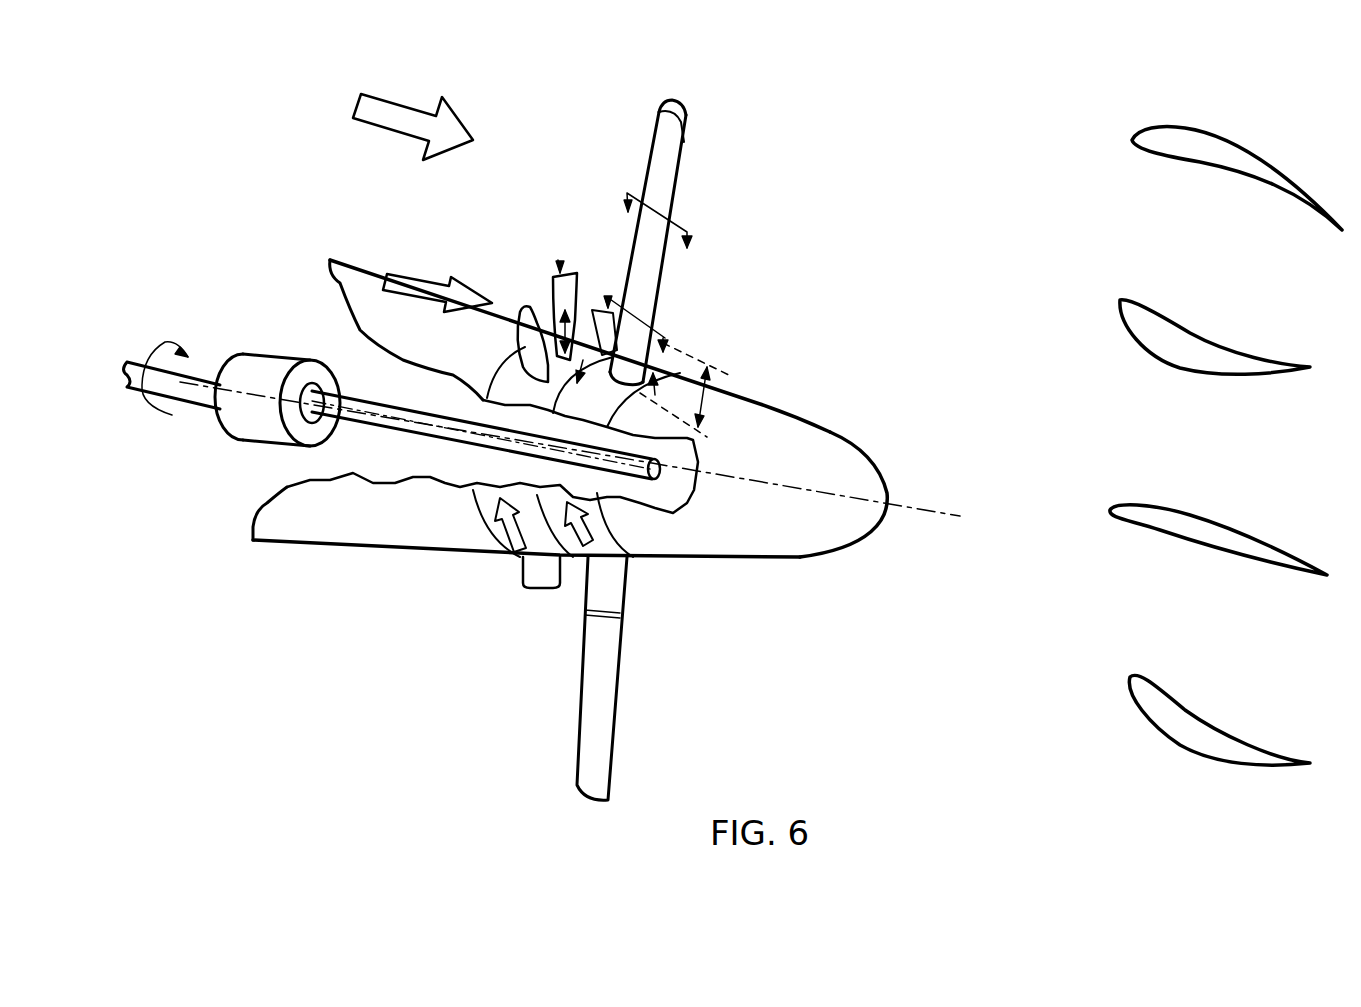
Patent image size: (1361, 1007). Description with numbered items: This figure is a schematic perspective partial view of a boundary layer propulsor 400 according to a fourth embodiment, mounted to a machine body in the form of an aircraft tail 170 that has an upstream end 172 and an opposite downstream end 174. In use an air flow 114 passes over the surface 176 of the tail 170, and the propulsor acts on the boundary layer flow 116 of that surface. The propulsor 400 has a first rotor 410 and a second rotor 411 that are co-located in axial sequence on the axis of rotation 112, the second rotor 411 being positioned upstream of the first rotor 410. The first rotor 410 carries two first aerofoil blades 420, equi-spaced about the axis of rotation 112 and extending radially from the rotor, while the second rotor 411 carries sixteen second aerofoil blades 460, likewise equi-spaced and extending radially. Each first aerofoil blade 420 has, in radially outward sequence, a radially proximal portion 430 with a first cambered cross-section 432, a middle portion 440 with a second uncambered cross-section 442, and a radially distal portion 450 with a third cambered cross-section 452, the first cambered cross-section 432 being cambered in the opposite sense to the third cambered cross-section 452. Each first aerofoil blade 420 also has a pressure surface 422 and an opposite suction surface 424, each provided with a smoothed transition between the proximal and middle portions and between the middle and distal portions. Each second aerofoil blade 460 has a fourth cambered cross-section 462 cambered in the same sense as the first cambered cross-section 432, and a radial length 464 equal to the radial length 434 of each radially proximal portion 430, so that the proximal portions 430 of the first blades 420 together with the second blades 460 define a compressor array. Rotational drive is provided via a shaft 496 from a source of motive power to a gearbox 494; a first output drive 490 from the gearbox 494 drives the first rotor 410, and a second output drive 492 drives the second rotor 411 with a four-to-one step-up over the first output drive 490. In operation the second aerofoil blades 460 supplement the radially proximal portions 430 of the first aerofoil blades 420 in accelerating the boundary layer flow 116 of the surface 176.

The axis of rotation 112 is at (945, 518).
The air flow 114 is at (410, 102).
The boundary layer flow 116 is at (443, 275).
The machine body 170 is at (290, 523).
The upstream end 172 is at (193, 242).
The downstream end 174 is at (890, 483).
The surface 176 is at (323, 553).
The boundary layer propulsor 400 is at (587, 450).
The first rotor 410 is at (650, 373).
The second rotor 411 is at (487, 507).
The first aerofoil blade 420 is at (614, 737).
The pressure surface 422 is at (660, 130).
The suction surface 424 is at (675, 160).
The radially proximal portion 430 is at (657, 367).
The first cambered cross-section 432 is at (1220, 343).
The radial length 434 is at (700, 400).
The middle portion 440 is at (625, 320).
The second uncambered cross-section 442 is at (1223, 528).
The radially distal portion 450 is at (662, 202).
The third cambered cross-section 452 is at (1260, 152).
The second aerofoil blade 460 is at (560, 290).
The fourth cambered cross-section 462 is at (1190, 718).
The radial length 464 is at (550, 322).
The first output drive 490 is at (357, 413).
The second output drive 492 is at (357, 388).
The gearbox 494 is at (253, 350).
The shaft 496 is at (200, 400).